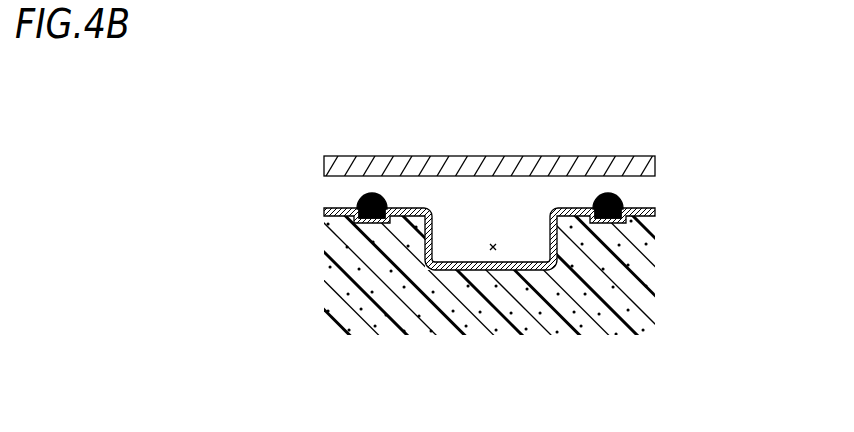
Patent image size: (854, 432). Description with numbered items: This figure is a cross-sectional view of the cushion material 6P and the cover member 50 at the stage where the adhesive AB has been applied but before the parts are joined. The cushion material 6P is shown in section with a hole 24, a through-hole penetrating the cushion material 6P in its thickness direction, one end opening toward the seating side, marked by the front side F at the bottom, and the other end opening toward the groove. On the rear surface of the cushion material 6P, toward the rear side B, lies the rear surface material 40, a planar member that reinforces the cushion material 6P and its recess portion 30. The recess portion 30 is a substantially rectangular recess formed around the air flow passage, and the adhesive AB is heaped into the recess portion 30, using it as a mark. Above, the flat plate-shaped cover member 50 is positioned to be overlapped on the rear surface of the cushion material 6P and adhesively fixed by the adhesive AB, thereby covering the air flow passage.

The cover member 50 is at (587, 166).
The rear surface material 40 is at (647, 207).
The recess portion 30 is at (490, 201).
The adhesive AB is at (358, 199).
The cushion material 6P is at (624, 277).
The hole 24 is at (495, 250).
The rear side B is at (500, 100).
The front side F is at (502, 410).